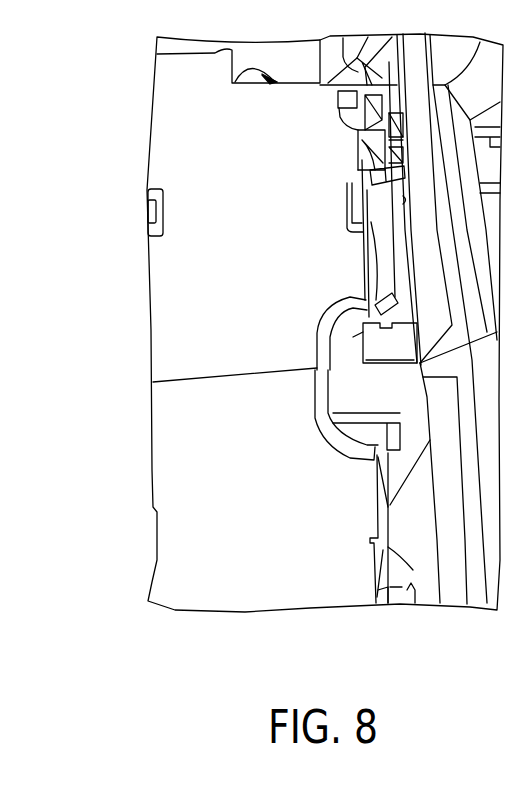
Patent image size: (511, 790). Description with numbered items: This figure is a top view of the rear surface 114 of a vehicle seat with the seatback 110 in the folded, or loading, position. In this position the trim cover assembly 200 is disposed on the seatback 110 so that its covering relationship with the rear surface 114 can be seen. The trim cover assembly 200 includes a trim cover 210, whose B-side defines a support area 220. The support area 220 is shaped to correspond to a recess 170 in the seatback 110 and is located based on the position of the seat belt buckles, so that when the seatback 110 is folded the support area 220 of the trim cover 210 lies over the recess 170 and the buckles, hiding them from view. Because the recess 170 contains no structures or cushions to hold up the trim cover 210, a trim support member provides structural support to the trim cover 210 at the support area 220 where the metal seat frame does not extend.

The seatback 110 is at (162, 162).
The rear surface 114 is at (277, 228).
The trim cover 210 is at (160, 335).
The support area 220 is at (290, 403).
The recess 170 is at (338, 410).
The trim cover assembly 200 is at (353, 590).